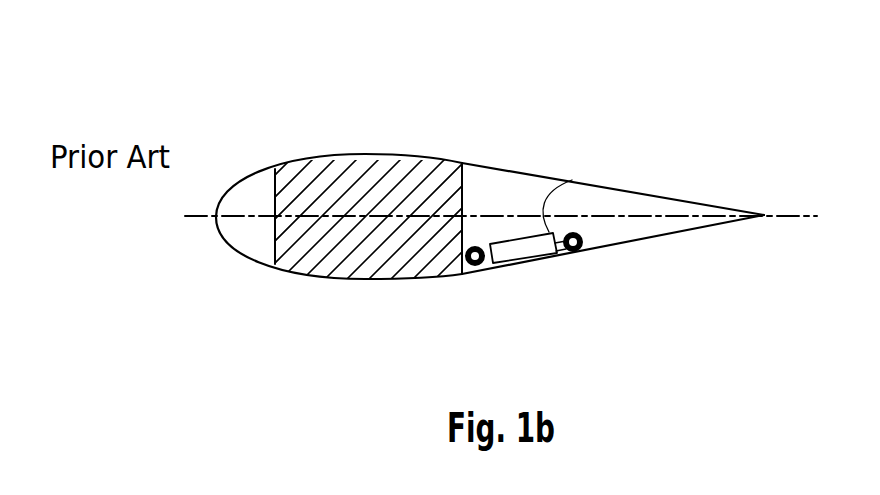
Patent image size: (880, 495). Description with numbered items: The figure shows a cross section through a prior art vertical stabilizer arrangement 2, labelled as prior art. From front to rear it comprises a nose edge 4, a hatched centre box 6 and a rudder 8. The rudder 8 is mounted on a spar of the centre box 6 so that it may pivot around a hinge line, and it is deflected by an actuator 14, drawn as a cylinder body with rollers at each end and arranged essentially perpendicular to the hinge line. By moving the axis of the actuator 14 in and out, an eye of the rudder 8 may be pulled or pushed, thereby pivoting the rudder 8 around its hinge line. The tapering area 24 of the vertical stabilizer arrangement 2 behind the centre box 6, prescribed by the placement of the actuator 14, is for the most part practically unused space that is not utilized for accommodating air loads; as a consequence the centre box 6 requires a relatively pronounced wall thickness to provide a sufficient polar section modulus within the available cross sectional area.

The vertical stabilizer arrangement 2 is at (282, 150).
The nose edge 4 is at (247, 237).
The centre box 6 is at (368, 262).
The rudder 8 is at (623, 207).
The actuator 14 is at (518, 253).
The area 24 is at (518, 170).